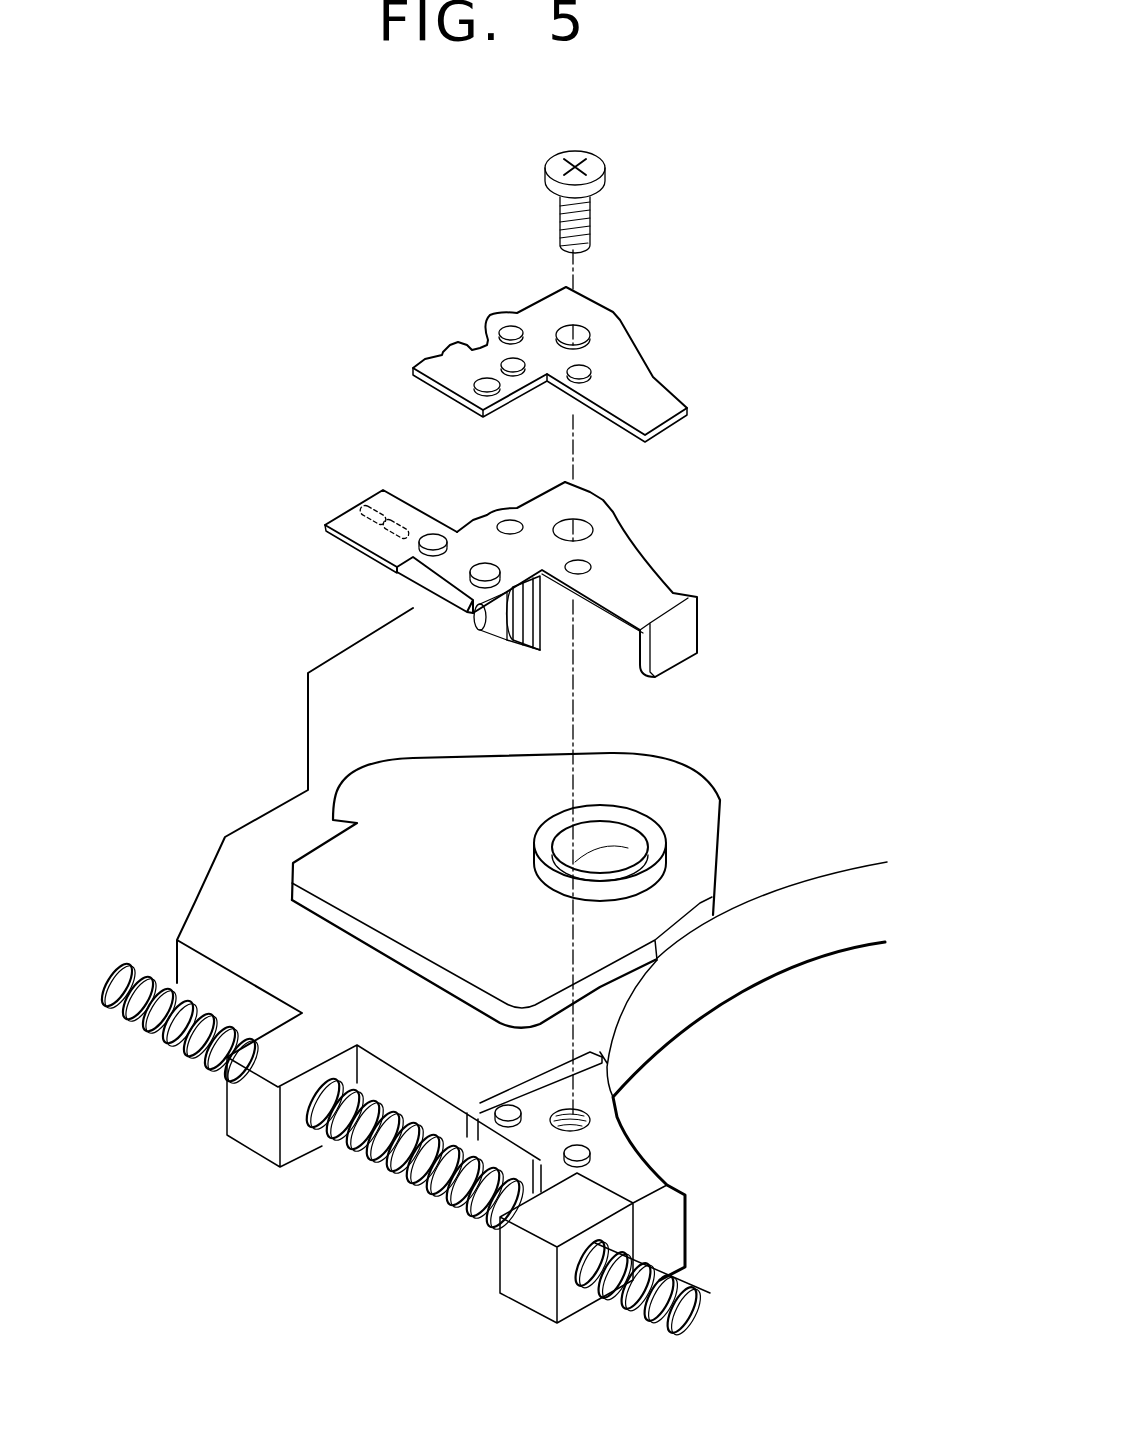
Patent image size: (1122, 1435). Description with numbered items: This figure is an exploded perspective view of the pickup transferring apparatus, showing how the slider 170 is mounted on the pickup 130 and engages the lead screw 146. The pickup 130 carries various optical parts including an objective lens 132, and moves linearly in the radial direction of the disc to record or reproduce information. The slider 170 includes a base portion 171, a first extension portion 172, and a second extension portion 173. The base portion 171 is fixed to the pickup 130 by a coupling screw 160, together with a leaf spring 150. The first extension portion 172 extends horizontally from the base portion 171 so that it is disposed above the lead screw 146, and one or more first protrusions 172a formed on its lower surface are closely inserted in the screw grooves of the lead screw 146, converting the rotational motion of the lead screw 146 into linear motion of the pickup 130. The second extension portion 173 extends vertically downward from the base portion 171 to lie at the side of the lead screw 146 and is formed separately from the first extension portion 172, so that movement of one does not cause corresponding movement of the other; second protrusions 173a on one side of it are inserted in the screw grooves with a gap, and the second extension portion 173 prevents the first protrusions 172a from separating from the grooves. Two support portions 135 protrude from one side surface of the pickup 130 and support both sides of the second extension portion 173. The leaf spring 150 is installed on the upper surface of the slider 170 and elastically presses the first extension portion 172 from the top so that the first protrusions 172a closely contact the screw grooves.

The pickup 130 is at (238, 810).
The objective lens 132 is at (627, 847).
The support portions 135 is at (457, 1207).
The lead screw 146 is at (367, 1162).
The leaf spring 150 is at (642, 393).
The coupling screw 160 is at (604, 183).
The slider 170 is at (519, 580).
The base portion 171 is at (533, 508).
The first extension portion 172 is at (352, 548).
The first protrusions 172a is at (368, 520).
The second extension portion 173 is at (537, 650).
The second protrusions 173a is at (510, 643).